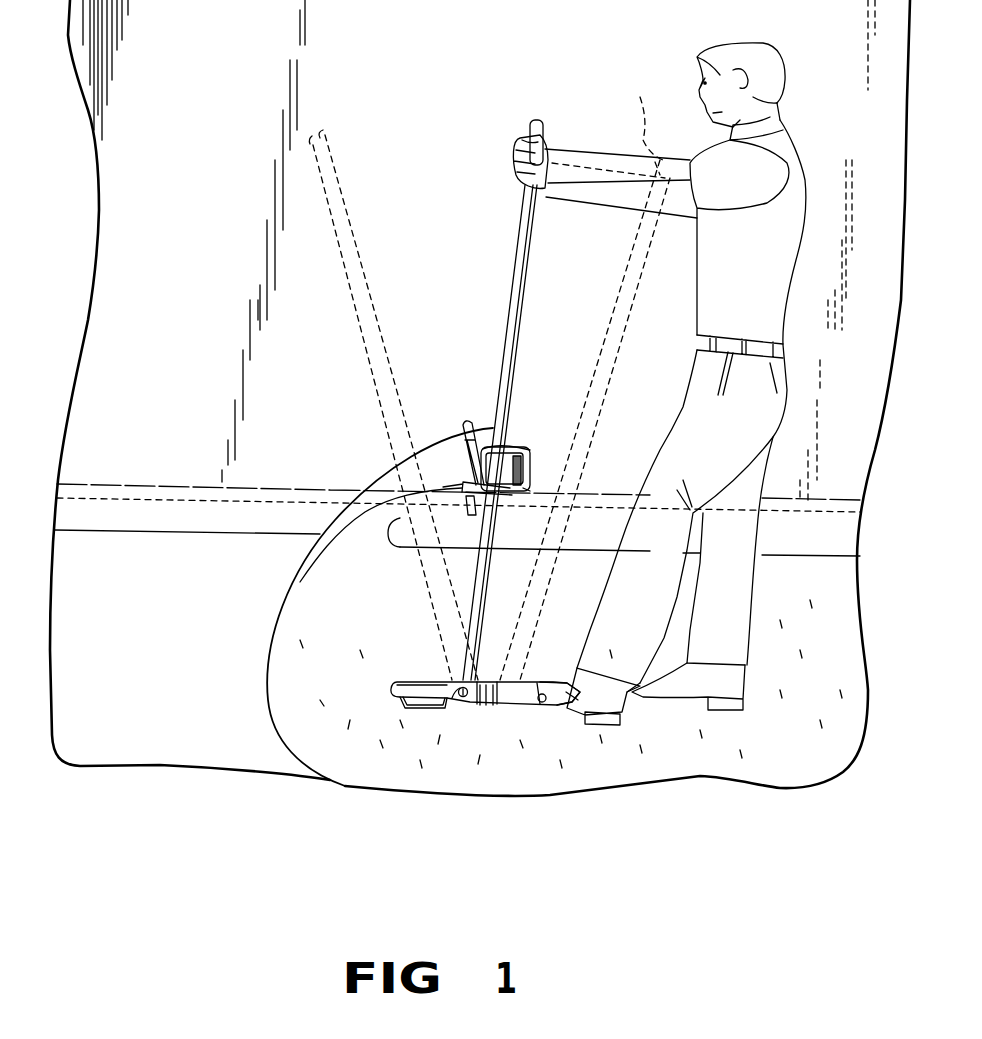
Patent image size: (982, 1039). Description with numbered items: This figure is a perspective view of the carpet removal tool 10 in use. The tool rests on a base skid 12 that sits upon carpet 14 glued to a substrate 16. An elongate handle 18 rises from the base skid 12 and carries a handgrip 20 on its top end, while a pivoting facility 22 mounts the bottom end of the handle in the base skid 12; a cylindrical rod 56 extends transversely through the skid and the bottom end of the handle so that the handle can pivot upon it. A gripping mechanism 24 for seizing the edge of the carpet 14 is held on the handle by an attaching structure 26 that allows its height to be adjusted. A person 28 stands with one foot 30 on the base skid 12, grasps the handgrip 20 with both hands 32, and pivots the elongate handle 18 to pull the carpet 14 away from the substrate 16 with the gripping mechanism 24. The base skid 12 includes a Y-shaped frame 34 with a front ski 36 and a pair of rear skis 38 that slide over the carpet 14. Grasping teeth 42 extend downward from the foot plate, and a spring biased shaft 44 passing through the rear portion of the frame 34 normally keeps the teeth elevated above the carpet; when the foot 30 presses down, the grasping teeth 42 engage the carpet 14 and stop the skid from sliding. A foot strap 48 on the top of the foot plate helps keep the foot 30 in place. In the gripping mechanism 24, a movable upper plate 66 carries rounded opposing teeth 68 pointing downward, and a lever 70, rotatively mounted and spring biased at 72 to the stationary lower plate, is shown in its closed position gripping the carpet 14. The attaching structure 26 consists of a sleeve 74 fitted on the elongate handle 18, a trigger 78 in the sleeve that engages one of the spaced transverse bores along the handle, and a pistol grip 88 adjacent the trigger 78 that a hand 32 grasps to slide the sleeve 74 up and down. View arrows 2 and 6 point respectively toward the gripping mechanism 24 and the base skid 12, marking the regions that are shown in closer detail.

The view arrow for FIG. 2 is at (455, 380).
The view arrow for FIG. 6 is at (517, 762).
The carpet removal tool 10 is at (480, 425).
The base skid 12 is at (469, 685).
The carpet 14 is at (678, 762).
The substrate 16 is at (145, 737).
The elongate handle 18 is at (356, 332).
The handgrip 20 is at (312, 136).
The pivoting facility 22 is at (463, 712).
The gripping mechanism 24 is at (485, 449).
The attaching structure 26 is at (513, 428).
The person 28 is at (812, 166).
The foot 30 is at (570, 688).
The hands 32 is at (520, 150).
The Y-shaped frame 34 is at (395, 684).
The front ski 36 is at (400, 703).
The rear skis 38 is at (570, 698).
The grasping teeth 42 is at (527, 706).
The spring biased shaft 44 is at (540, 680).
The foot strap 48 is at (530, 680).
The cylindrical rod 56 is at (455, 697).
The movable upper plate 66 is at (462, 470).
The rounded opposing teeth 68 is at (455, 472).
The lever 70 is at (468, 420).
The spring bias 72 is at (467, 498).
The sleeve 74 is at (530, 447).
The trigger 78 is at (545, 488).
The pistol grip 88 is at (526, 463).